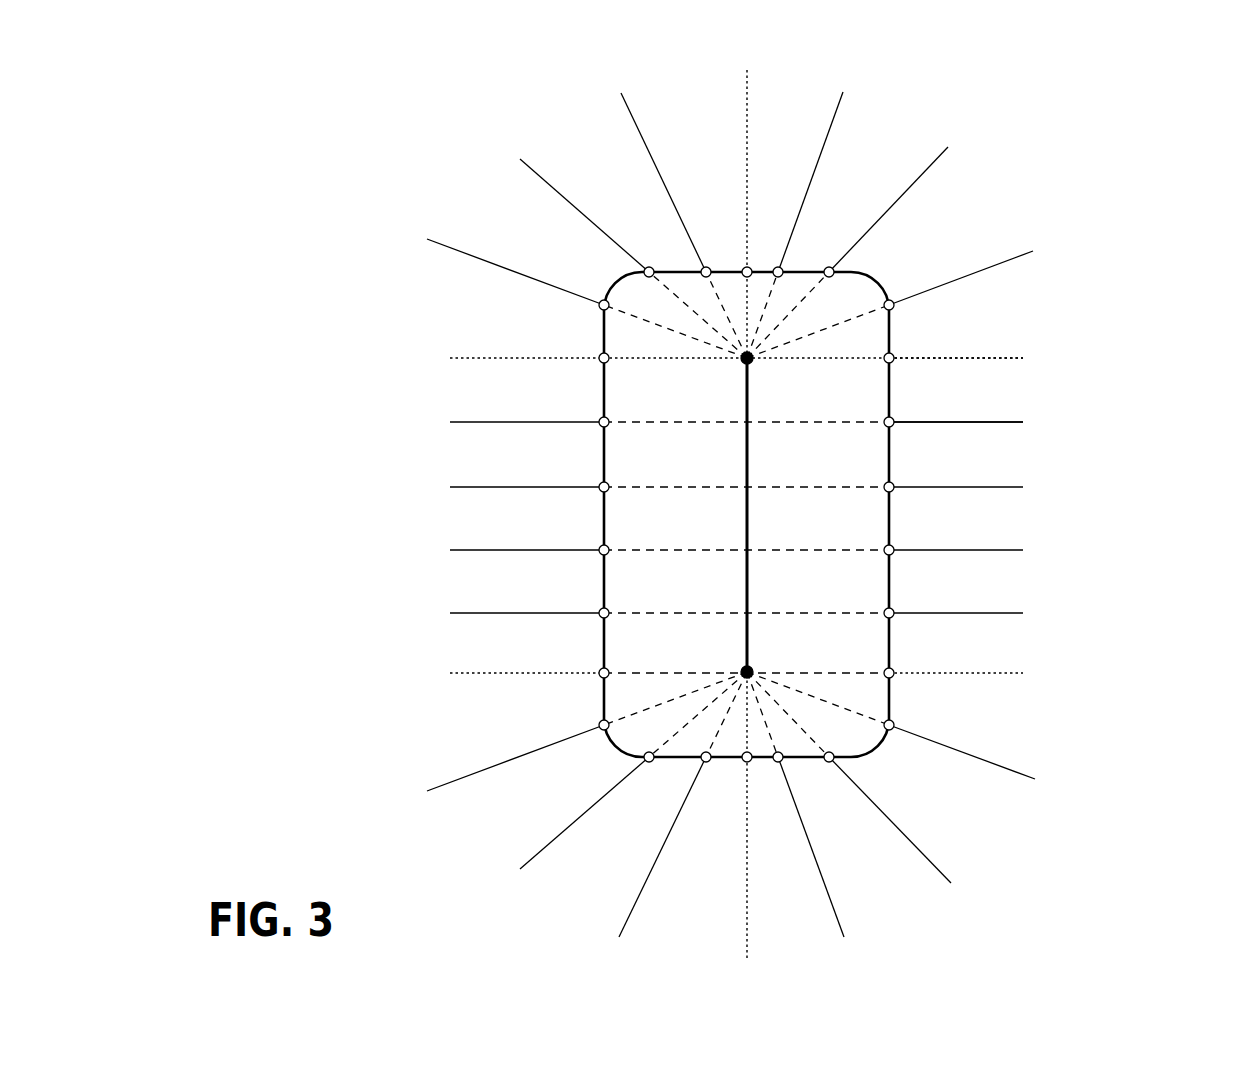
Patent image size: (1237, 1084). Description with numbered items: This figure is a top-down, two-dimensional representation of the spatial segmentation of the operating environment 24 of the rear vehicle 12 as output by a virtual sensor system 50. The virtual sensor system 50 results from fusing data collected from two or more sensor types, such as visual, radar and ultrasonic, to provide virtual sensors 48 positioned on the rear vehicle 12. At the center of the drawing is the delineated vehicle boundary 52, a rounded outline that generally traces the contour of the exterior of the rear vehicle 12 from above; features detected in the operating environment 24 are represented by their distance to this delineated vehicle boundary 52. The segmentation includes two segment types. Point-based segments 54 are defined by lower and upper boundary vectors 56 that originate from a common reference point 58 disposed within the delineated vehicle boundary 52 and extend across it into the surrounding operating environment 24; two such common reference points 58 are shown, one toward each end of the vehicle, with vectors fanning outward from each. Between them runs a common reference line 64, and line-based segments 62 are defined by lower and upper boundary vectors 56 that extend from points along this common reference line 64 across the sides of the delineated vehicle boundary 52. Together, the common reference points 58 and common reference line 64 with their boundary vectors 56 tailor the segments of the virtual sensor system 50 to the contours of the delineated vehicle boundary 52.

The rear vehicle 12 is at (1082, 101).
The operating environment 24 is at (567, 120).
The virtual sensors 48 is at (889, 550).
The virtual sensor system 50 is at (906, 124).
The delineated vehicle boundary 52 is at (877, 278).
The point-based segments 54 is at (721, 208).
The lower and upper boundary vectors 56 is at (1003, 360).
The common reference point 58 is at (738, 366).
The line-based segments 62 is at (553, 583).
The common reference line 64 is at (740, 517).